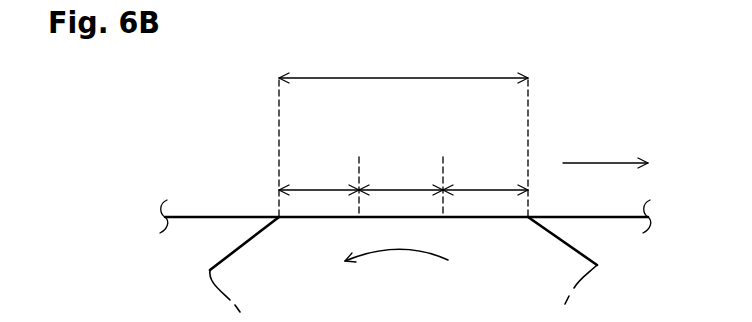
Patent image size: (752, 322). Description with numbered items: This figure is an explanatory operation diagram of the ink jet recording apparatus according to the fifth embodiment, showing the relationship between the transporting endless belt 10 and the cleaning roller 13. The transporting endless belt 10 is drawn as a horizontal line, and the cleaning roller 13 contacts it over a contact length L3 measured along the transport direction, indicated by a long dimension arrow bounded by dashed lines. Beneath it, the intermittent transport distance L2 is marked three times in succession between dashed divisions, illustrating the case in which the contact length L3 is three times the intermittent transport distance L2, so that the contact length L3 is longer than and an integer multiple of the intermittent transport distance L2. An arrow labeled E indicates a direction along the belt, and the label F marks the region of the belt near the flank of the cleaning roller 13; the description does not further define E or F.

The transporting endless belt 10 is at (222, 217).
The cleaning roller 13 is at (262, 244).
The flank / surface region F is at (597, 218).
The contact length L3 is at (398, 76).
The intermittent transport distance L2 is at (303, 188).
The direction E is at (605, 150).